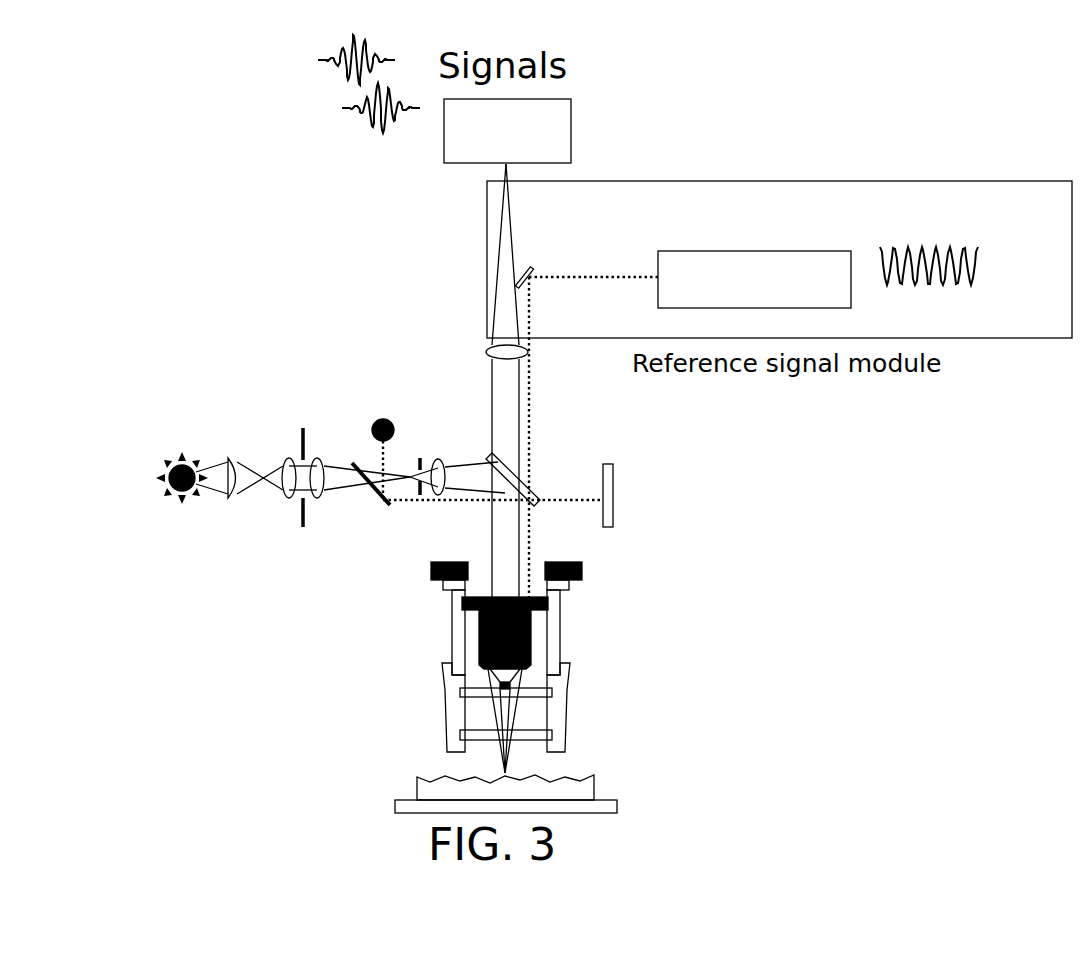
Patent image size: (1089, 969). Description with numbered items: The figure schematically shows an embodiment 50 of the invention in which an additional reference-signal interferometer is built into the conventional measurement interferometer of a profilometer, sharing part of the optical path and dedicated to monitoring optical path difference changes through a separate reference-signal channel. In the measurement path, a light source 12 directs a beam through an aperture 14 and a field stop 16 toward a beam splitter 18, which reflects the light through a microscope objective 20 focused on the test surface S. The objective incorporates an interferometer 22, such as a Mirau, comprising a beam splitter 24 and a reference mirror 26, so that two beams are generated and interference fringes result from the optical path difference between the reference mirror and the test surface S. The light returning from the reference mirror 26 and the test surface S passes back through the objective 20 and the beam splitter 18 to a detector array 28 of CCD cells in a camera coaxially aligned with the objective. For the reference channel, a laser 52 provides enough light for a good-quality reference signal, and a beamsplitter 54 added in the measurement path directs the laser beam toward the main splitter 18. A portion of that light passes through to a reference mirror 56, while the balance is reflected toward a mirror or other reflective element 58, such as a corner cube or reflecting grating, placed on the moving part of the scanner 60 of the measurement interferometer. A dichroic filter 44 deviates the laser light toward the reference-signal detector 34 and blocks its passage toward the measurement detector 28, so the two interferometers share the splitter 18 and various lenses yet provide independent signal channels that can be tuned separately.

The light source 12 is at (168, 465).
The aperture 14 is at (303, 428).
The field stop 16 is at (423, 448).
The beam splitter 18 is at (527, 462).
The microscope objective 20 is at (530, 638).
The interferometer 22 is at (565, 688).
The beam splitter 24 is at (533, 730).
The reference mirror 26 is at (480, 700).
The detector array 28 is at (572, 122).
The reference-signal detector 34 is at (798, 250).
The dichroic filter 44 is at (534, 263).
The embodiment 50 is at (745, 134).
The laser 52 is at (378, 417).
The beamsplitter 54 is at (373, 493).
The reference mirror 56 is at (614, 488).
The reflective element 58 is at (532, 593).
The scanner 60 is at (563, 590).
The test surface S is at (568, 775).